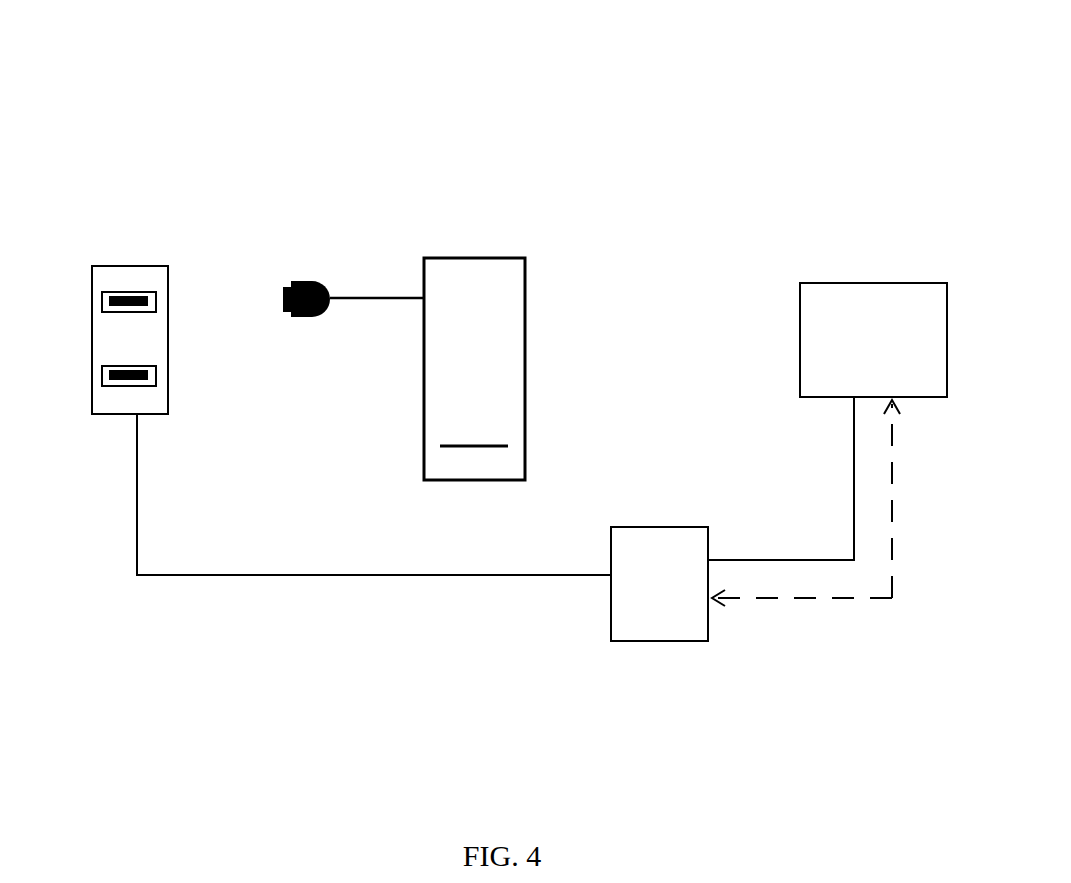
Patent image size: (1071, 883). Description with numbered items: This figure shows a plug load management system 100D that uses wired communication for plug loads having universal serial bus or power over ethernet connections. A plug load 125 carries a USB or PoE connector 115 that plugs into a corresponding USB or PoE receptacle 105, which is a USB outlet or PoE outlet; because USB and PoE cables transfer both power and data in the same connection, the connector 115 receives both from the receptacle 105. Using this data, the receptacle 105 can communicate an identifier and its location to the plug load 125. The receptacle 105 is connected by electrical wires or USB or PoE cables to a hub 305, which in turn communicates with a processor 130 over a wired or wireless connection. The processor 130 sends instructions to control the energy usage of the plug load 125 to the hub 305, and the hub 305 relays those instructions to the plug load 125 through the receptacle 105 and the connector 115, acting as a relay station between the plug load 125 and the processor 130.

The PL management system 100D is at (446, 122).
The USB or PoE receptacle 105 is at (102, 300).
The USB or PoE connector 115 is at (301, 318).
The plug load 125 is at (512, 238).
The processor 130 is at (873, 340).
The hub 305 is at (659, 584).